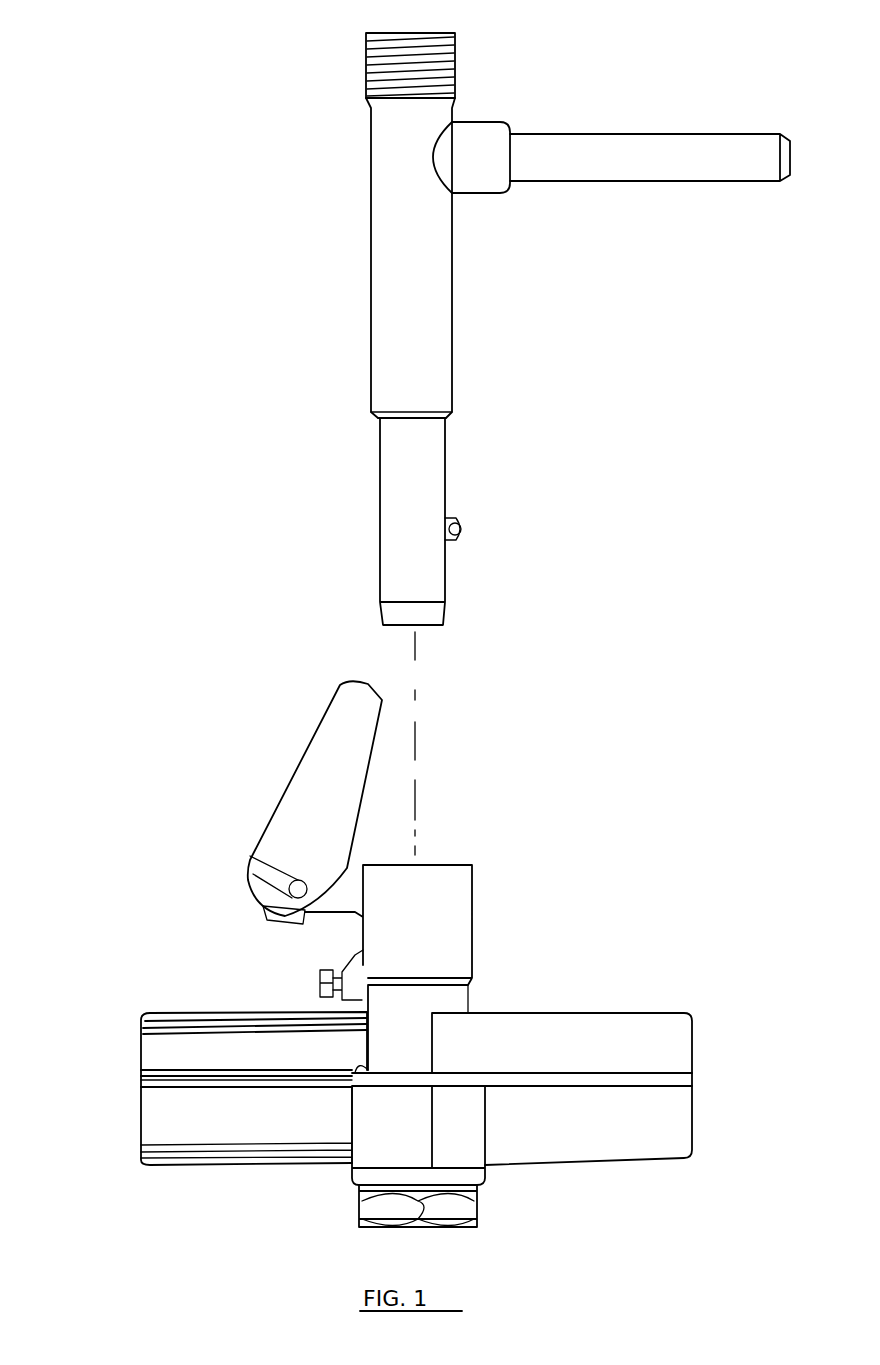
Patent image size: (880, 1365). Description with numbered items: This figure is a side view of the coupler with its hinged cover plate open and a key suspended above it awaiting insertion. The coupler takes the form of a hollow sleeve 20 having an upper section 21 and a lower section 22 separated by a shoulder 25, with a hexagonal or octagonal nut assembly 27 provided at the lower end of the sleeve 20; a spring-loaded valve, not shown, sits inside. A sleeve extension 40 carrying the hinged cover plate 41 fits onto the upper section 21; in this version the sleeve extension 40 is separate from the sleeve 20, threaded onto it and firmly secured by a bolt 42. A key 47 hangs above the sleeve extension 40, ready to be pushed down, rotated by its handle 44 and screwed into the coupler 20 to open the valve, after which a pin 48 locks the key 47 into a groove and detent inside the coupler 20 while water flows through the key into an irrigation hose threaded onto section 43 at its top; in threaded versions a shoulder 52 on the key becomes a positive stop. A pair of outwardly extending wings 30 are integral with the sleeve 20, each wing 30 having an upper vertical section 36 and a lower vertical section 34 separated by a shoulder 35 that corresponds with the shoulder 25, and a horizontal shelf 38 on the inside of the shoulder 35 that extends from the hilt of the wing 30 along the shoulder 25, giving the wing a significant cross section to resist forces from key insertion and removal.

The hollow sleeve 20 is at (478, 1006).
The upper section 21 is at (468, 995).
The lower section 22 is at (378, 1147).
The shoulder 25 is at (385, 1080).
The nut assembly 27 is at (445, 1210).
The wings 30 is at (700, 1041).
The lower vertical section 34 is at (672, 1130).
The shoulder 35 is at (683, 1079).
The upper vertical section 36 is at (600, 1032).
The shelf 38 is at (272, 1073).
The sleeve extension 40 is at (458, 902).
The hinged cover plate 41 is at (322, 770).
The bolt 42 is at (322, 978).
The section 43 is at (448, 66).
The handle 44 is at (625, 165).
The key 47 is at (397, 468).
The pin 48 is at (462, 530).
The shoulder 52 is at (448, 420).